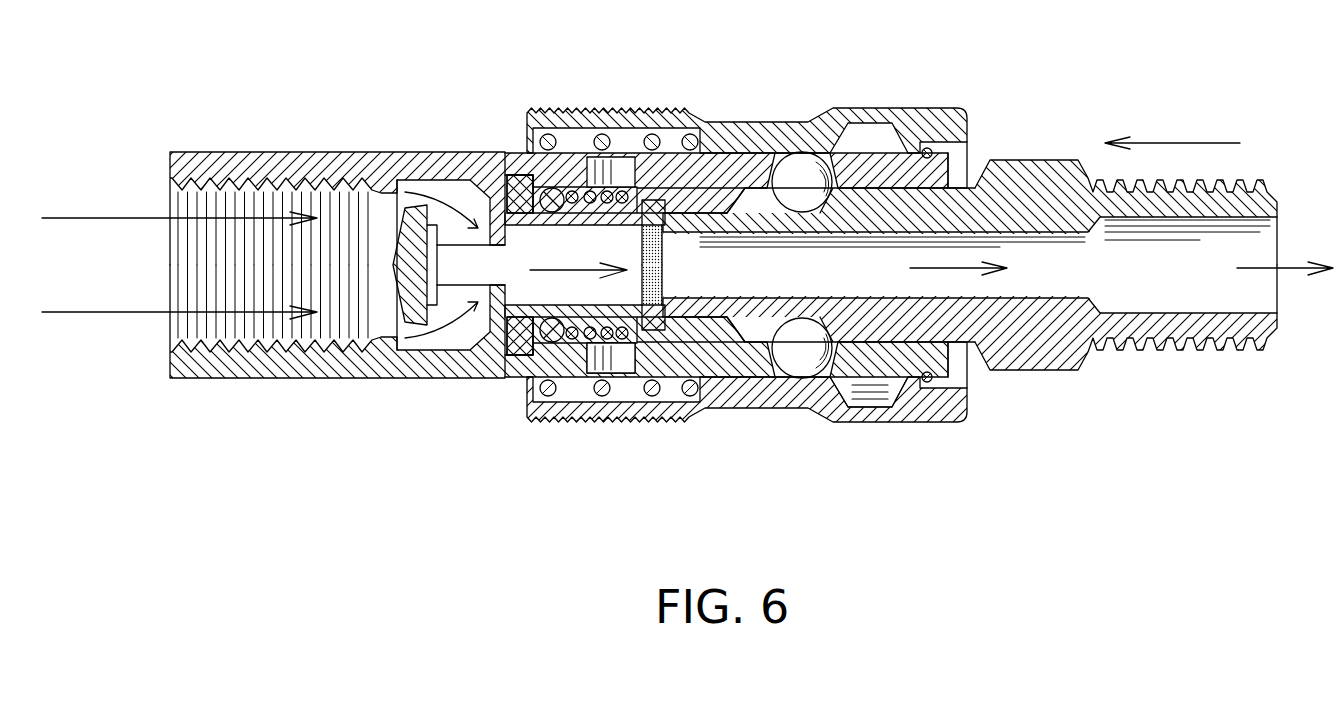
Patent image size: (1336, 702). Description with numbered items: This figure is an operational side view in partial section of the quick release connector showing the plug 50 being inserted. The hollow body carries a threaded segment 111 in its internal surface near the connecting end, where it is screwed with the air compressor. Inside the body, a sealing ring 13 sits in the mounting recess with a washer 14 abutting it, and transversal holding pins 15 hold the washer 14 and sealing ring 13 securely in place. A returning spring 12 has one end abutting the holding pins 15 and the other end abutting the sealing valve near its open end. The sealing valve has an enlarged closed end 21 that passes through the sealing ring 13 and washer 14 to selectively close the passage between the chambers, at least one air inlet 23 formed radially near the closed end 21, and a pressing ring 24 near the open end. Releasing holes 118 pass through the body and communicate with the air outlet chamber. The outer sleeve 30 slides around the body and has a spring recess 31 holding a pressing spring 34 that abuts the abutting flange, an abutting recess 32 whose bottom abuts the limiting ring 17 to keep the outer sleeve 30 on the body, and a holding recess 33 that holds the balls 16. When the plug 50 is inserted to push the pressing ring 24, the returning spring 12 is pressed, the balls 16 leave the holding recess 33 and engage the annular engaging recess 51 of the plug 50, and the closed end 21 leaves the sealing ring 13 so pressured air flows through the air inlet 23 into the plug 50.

The threaded segment 111 is at (192, 270).
The closed end 21 is at (393, 250).
The air inlet 23 is at (482, 233).
The outer sleeve 30 is at (781, 90).
The spring recess 31 is at (617, 130).
The sealing ring 13 is at (520, 190).
The washer 14 is at (517, 342).
The holding pins 15 is at (560, 190).
The returning spring 12 is at (603, 348).
The pressing spring 34 is at (652, 138).
The releasing holes 118 is at (633, 372).
The engaging recess 51 is at (814, 326).
The balls 16 is at (777, 357).
The limiting ring 17 is at (933, 148).
The abutting recess 32 is at (947, 388).
The holding recess 33 is at (856, 405).
The plug 50 is at (1025, 138).
The pressing ring 24 is at (663, 248).